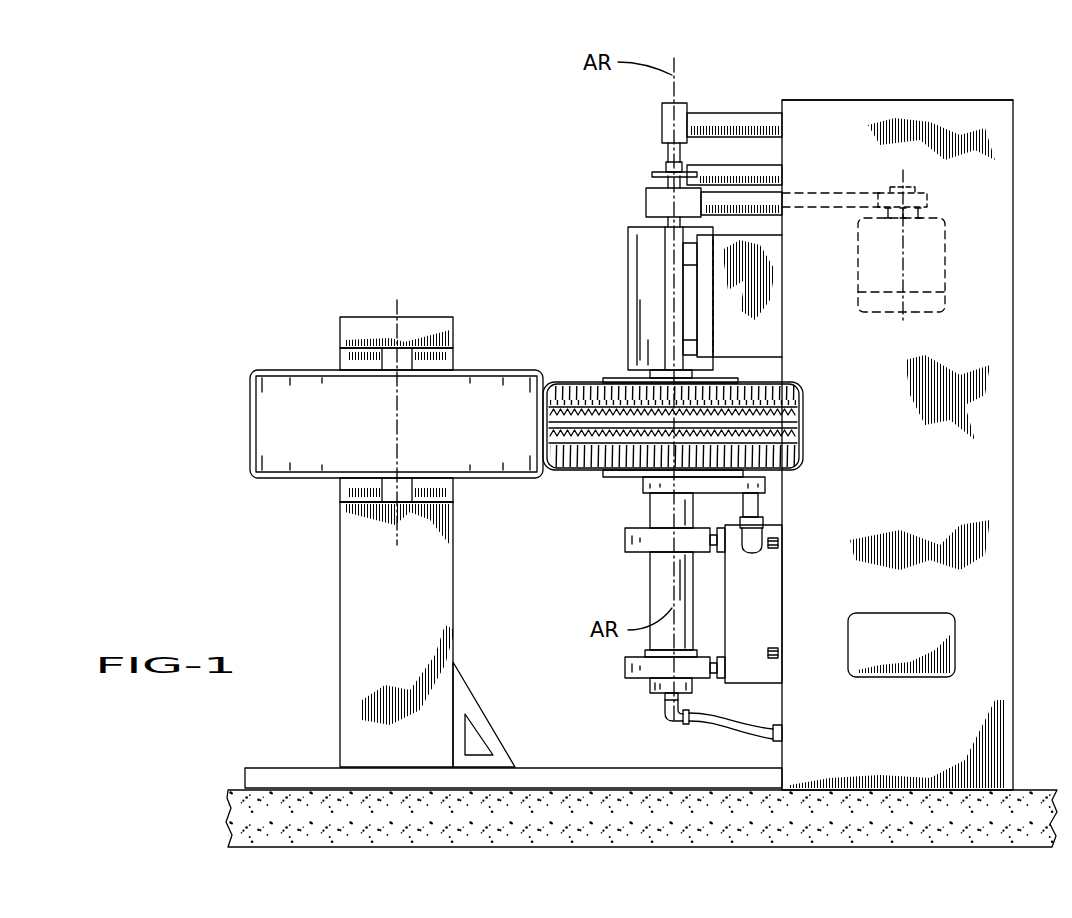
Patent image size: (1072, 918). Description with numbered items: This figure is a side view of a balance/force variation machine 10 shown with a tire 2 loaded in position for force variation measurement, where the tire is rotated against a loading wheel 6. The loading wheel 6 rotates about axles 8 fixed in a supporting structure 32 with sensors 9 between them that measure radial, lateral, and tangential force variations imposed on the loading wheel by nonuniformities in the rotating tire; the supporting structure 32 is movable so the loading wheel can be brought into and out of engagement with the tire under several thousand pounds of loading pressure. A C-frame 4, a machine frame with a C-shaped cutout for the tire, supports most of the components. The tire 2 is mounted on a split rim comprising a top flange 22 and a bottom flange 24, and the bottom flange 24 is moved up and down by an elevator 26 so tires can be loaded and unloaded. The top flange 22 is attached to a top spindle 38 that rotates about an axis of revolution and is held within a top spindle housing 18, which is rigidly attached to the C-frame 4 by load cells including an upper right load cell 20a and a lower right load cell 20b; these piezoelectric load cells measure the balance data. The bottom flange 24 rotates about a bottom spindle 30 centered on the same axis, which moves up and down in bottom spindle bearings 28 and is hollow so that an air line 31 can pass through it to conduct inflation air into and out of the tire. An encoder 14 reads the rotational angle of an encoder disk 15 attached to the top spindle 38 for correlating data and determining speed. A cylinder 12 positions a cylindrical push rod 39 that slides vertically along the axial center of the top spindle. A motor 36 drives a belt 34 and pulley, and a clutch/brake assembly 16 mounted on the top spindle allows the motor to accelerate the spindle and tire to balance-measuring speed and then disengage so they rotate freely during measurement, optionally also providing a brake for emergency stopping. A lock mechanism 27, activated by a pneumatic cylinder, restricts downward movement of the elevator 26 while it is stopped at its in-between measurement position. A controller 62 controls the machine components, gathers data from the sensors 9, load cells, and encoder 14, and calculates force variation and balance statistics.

The tire 2 is at (795, 410).
The C-frame 4 is at (965, 100).
The loading wheel 6 is at (262, 420).
The axles 8 is at (392, 357).
The sensors 9 is at (390, 340).
The balance/force variation machine 10 is at (425, 205).
The cylinder 12 is at (682, 122).
The encoder 14 is at (692, 168).
The encoder disk 15 is at (650, 175).
The clutch/brake assembly 16 is at (646, 205).
The top spindle housing 18 is at (628, 282).
The upper right load cell 20a is at (692, 255).
The lower right load cell 20b is at (688, 348).
The top flange 22 is at (614, 372).
The bottom flange 24 is at (614, 479).
The elevator 26 is at (762, 518).
The lock mechanism 27 is at (755, 553).
The bottom spindle bearings 28 is at (635, 542).
The bottom spindle 30 is at (660, 590).
The air line 31 is at (745, 729).
The supporting structure 32 is at (352, 605).
The belt 34 is at (843, 193).
The motor 36 is at (945, 235).
The top spindle 38 is at (666, 166).
The push rod 39 is at (666, 153).
The controller 62 is at (945, 637).